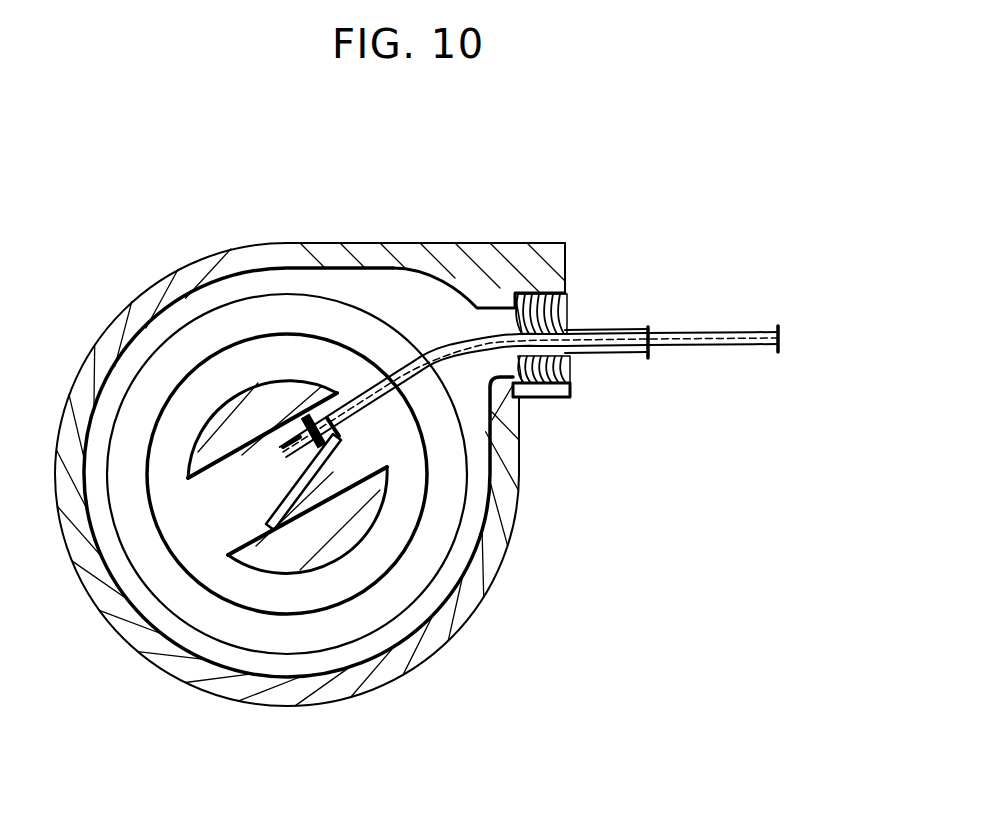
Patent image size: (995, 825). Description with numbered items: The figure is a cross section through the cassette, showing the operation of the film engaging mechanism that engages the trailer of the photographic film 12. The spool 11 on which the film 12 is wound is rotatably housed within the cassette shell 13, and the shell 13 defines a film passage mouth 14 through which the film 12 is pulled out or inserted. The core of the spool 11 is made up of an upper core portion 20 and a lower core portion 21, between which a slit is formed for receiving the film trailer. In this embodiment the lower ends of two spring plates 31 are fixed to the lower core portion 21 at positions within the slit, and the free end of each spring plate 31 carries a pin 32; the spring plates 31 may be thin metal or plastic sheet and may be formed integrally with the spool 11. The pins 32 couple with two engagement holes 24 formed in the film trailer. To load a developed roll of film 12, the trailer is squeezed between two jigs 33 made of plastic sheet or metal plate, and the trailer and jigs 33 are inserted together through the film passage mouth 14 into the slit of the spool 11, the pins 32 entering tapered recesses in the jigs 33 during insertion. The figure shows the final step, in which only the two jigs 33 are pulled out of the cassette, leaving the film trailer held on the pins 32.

The spool 11 is at (137, 337).
The photographic film 12 is at (745, 330).
The cassette shell 13 is at (497, 215).
The film passage mouth 14 is at (572, 296).
The upper core portion 20 is at (242, 412).
The lower core portion 21 is at (292, 558).
The engagement holes 24 is at (312, 388).
The spring plates 31 is at (322, 468).
The pin 32 is at (305, 455).
The jig 33 is at (645, 325).